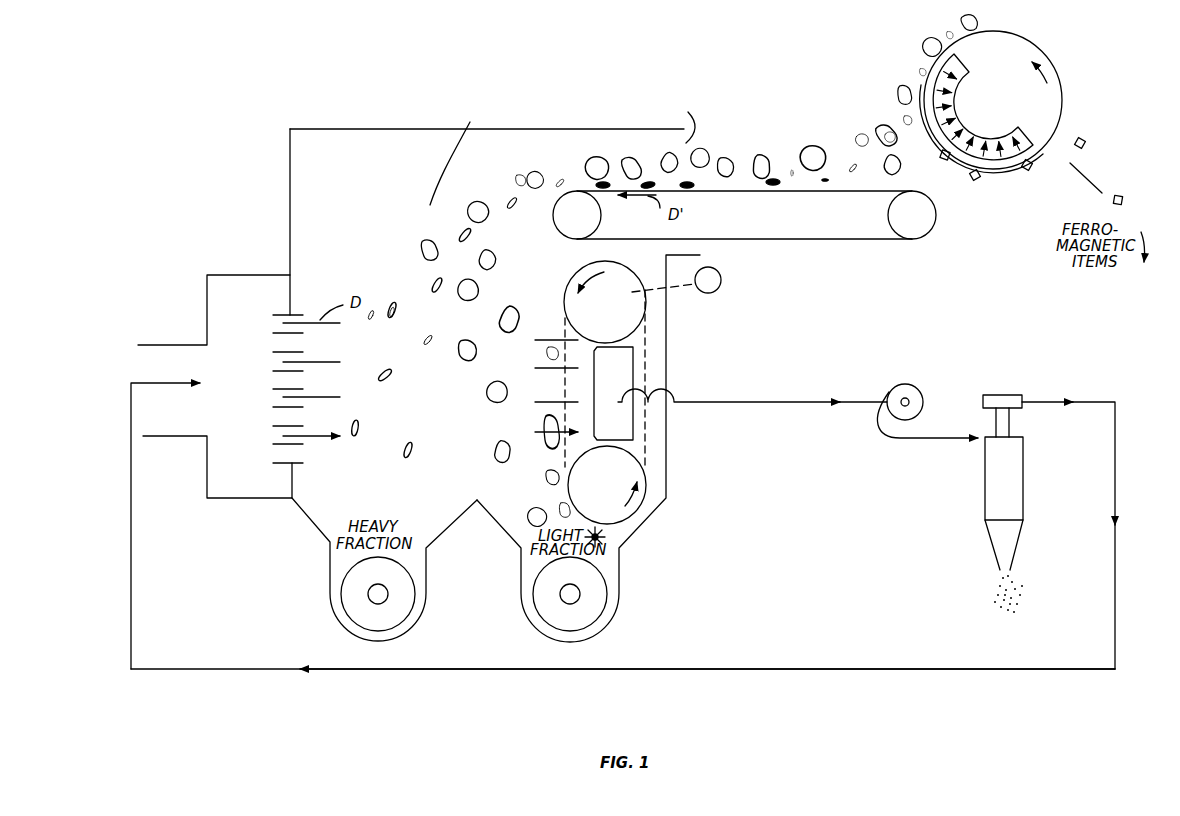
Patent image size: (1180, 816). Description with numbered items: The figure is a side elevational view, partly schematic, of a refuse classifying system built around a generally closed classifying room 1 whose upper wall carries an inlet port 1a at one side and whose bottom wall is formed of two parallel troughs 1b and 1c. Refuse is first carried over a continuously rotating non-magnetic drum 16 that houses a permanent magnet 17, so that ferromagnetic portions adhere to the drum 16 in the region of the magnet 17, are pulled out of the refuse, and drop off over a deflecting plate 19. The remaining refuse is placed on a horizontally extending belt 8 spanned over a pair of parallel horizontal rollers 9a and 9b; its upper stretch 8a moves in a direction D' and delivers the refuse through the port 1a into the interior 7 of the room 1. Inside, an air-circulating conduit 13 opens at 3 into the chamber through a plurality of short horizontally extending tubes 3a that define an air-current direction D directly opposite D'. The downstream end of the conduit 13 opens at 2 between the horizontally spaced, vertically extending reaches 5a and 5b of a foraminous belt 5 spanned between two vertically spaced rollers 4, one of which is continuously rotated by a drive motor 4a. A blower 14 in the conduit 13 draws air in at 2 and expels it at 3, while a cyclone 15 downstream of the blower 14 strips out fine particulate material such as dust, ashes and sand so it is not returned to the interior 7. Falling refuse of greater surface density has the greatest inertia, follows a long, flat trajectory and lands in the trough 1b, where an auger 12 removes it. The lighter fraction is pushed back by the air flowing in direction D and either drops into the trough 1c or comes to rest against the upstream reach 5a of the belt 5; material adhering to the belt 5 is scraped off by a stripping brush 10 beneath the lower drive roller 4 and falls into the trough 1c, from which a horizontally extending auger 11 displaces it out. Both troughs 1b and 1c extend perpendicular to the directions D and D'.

The classifying room 1 is at (302, 157).
The inlet port 1a is at (685, 116).
The trough 1b is at (312, 508).
The trough 1c is at (503, 506).
The downstream end opening 2 is at (622, 376).
The conduit end opening 3 is at (302, 312).
The short horizontally extending tubes 3a is at (278, 325).
The rollers 4 is at (612, 281).
The drive motor 4a is at (721, 285).
The foraminous belt 5 is at (650, 433).
The upstream reach 5a is at (558, 384).
The reach 5b is at (648, 360).
The interior 7 is at (450, 153).
The belt 8 is at (781, 222).
The upper stretch 8a is at (724, 181).
The roller 9a is at (590, 217).
The roller 9b is at (913, 223).
The stripping brush 10 is at (600, 537).
The auger 11 is at (594, 600).
The auger 12 is at (353, 592).
The air-circulating conduit 13 is at (134, 610).
The blower 14 is at (914, 386).
The cyclone 15 is at (998, 483).
The non-magnetic drum 16 is at (1066, 98).
The permanent magnet 17 is at (991, 160).
The deflecting plate 19 is at (1084, 181).